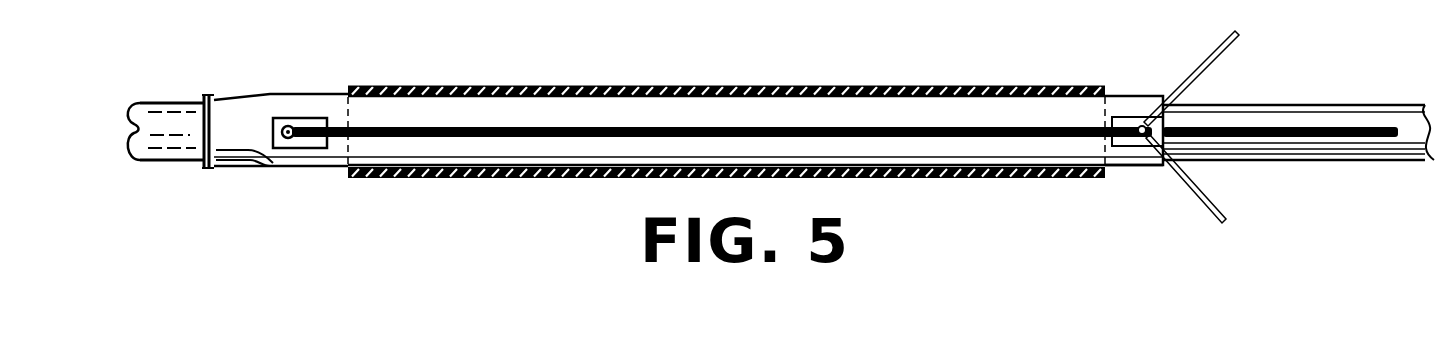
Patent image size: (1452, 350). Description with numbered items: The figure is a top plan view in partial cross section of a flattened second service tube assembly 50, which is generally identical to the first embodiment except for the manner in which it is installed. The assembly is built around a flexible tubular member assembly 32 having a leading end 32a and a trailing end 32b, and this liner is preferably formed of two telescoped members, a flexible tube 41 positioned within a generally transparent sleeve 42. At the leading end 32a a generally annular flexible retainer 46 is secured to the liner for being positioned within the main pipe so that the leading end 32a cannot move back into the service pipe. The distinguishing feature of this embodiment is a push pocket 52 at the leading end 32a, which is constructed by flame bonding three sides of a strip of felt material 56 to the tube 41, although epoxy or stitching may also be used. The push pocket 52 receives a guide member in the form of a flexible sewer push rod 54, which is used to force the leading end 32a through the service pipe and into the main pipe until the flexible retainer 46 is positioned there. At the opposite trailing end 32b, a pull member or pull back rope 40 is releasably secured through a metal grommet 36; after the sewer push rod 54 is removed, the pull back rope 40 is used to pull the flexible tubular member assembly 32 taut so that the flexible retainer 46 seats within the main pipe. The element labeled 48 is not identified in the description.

The flexible tubular member assembly 32 is at (457, 181).
The leading end 32a is at (264, 165).
The trailing end 32b is at (1125, 166).
The metal grommet 36 is at (1140, 124).
The pull back rope 40 is at (1198, 184).
The flexible tube 41 is at (313, 103).
The transparent sleeve 42 is at (851, 178).
The flexible retainer 46 is at (205, 97).
The cable / connector 48 is at (137, 161).
The second service tube assembly 50 is at (830, 84).
The push pocket 52 is at (310, 147).
The sewer push rod 54 is at (334, 96).
The strip of felt material 56 is at (273, 117).